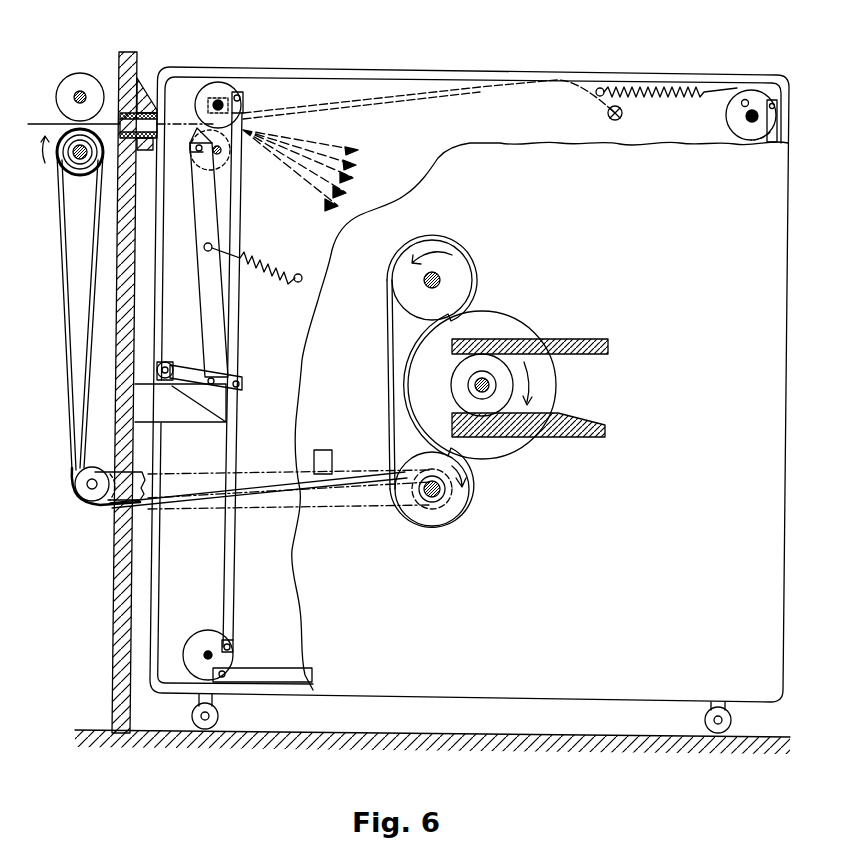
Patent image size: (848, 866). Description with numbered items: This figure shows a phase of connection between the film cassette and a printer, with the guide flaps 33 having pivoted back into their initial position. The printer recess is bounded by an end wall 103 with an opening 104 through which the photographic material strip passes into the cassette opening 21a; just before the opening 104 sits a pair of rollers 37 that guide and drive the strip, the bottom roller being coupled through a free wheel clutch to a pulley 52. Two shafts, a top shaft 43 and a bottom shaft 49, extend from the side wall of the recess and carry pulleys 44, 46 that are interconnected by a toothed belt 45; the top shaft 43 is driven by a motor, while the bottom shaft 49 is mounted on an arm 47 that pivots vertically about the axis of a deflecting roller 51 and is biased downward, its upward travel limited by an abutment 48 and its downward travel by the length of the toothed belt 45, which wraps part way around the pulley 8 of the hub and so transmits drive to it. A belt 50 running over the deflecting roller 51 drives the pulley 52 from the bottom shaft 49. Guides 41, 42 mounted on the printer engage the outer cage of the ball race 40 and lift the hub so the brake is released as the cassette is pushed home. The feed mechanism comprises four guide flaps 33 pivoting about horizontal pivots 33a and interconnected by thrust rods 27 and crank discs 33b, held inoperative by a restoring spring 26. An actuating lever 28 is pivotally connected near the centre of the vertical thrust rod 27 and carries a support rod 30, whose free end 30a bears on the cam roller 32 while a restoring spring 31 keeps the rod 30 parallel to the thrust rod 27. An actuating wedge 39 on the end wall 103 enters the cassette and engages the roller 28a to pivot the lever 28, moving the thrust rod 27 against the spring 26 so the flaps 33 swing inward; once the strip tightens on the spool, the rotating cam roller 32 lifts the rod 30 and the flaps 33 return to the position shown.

The pulley 8 is at (497, 323).
The opening 21a is at (155, 100).
The restoring spring 26 is at (628, 90).
The thrust rod 27 is at (226, 598).
The actuating lever 28 is at (198, 378).
The roller 28a is at (160, 370).
The bearing or support rod 30 is at (207, 223).
The free end of rod 30a is at (192, 143).
The restoring spring 31 is at (272, 281).
The cam roller 32 is at (220, 150).
The guide flap 33 is at (410, 96).
The horizontal pivot 33a is at (219, 100).
The crank disc 33b is at (241, 95).
The pair of rollers 37 is at (72, 93).
The actuating wedge 39 is at (200, 416).
The ball race 40 is at (502, 375).
The guide 41 is at (607, 428).
The guide 42 is at (602, 339).
The top shaft 43 is at (436, 278).
The pulley 44 is at (455, 252).
The toothed belt 45 is at (386, 352).
The pulley 46 is at (435, 528).
The arm 47 is at (354, 492).
The abutment 48 is at (331, 450).
The bottom shaft 49 is at (440, 497).
The belt 50 is at (62, 257).
The deflecting roller 51 is at (75, 508).
The pulley 52 is at (72, 172).
The end wall 103 is at (143, 62).
The opening 104 is at (133, 75).